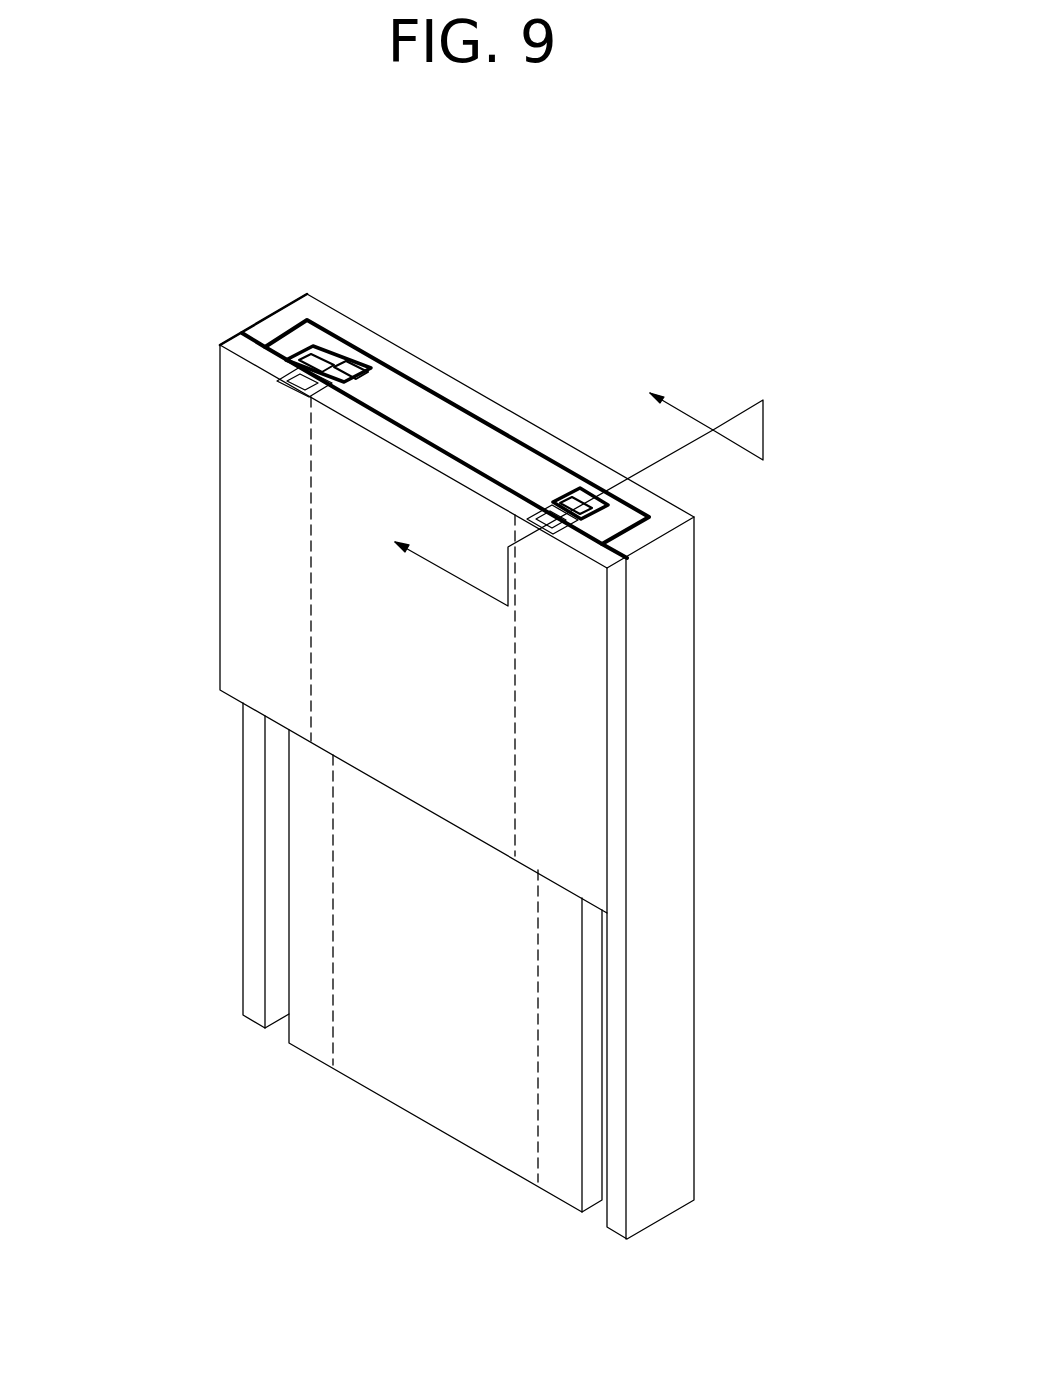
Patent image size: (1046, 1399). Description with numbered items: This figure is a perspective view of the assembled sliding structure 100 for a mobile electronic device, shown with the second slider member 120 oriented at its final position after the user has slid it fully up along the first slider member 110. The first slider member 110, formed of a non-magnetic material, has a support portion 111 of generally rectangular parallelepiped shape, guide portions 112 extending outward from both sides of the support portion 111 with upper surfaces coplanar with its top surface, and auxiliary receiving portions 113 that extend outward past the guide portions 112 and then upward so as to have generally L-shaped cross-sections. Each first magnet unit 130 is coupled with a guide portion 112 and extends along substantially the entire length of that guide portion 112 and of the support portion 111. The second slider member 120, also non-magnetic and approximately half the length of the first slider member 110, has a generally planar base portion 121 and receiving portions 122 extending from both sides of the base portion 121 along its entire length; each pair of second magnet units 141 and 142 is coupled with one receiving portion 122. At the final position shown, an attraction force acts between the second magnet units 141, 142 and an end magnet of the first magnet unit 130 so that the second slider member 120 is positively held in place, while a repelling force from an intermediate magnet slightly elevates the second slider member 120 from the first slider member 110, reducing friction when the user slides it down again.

The sliding structure 100 is at (798, 266).
The first slider member 110 is at (494, 376).
The support portion 111 is at (428, 388).
The guide portion 112 is at (263, 343).
The auxiliary receiving portion 113 is at (290, 318).
The second slider member 120 is at (212, 561).
The base portion 121 is at (343, 672).
The receiving portion 122 is at (258, 596).
The first magnet unit 130 is at (321, 350).
The second magnet unit 141 is at (345, 350).
The second magnet unit 142 is at (272, 386).